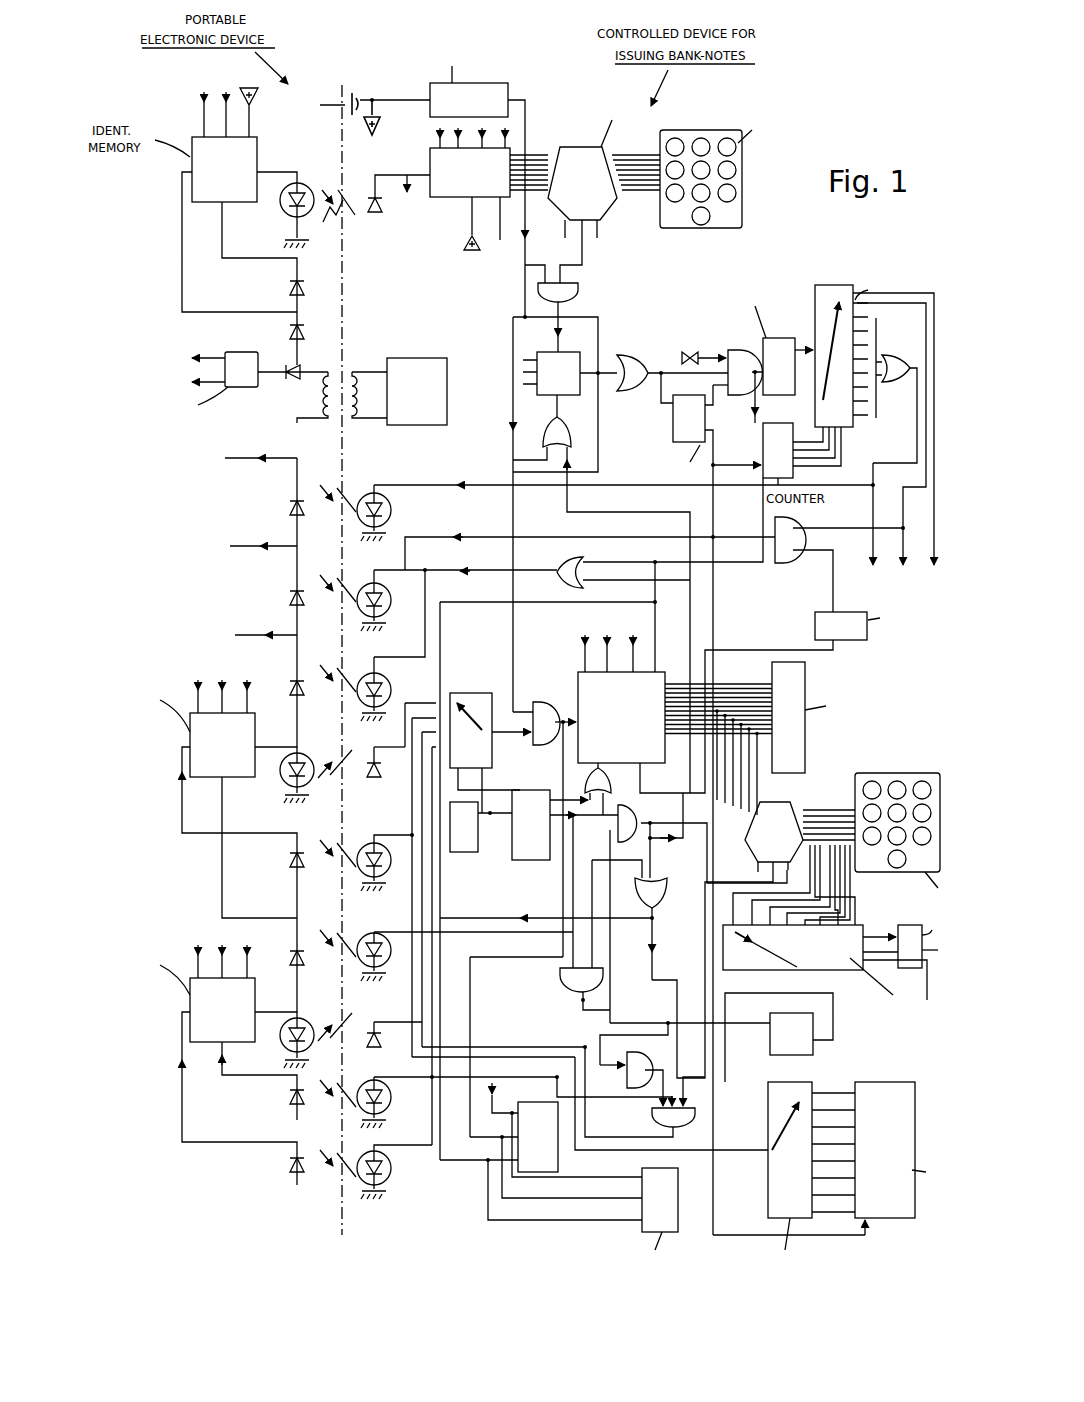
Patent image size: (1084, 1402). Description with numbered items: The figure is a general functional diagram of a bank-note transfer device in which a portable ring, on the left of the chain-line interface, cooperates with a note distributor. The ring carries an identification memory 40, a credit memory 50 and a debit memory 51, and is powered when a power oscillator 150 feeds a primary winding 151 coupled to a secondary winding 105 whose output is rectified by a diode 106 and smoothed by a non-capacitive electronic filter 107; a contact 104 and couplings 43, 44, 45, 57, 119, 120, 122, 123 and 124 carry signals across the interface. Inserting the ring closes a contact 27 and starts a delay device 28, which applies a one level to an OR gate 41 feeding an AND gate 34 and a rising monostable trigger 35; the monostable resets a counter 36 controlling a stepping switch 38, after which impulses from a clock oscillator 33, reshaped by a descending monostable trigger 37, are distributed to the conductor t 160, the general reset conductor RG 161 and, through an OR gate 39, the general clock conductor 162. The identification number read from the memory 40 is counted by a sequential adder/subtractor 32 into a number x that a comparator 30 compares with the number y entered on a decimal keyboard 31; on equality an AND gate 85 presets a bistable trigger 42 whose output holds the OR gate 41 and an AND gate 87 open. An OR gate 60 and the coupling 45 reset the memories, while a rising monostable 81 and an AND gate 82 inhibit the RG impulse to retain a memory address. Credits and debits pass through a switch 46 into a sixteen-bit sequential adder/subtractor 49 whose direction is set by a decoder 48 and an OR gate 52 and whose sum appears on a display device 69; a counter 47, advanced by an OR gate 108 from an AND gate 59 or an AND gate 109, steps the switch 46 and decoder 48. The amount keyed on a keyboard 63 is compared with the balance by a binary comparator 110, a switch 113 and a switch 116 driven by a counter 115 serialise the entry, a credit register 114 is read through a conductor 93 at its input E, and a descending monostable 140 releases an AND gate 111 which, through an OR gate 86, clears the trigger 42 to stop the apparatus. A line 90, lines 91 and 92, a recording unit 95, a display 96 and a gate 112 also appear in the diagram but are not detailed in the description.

The contact 27 is at (375, 104).
The delay device 28 is at (478, 185).
The comparator 30 is at (569, 148).
The decimal keyboard 31 is at (693, 131).
The sequential adder/subtractor 32 is at (475, 183).
The clock oscillator 33 is at (672, 325).
The AND gate 34 is at (738, 373).
The rising monostable trigger 35 is at (701, 428).
The counter 36 is at (779, 425).
The descending monostable trigger 37 is at (770, 343).
The stepping switch 38 is at (830, 286).
The OR gate 39 is at (895, 396).
The identification memory 40 is at (257, 152).
The OR gate 41 is at (672, 366).
The bistable trigger 42 is at (537, 396).
The relay contact 43 is at (330, 486).
The coupling 44 is at (330, 576).
The optical coupling 45 is at (330, 666).
The switch 46 is at (492, 693).
The counter 47 is at (460, 854).
The decoder 48 is at (530, 857).
The sequential adder/subtractor 49 is at (578, 687).
The credit memory 50 is at (255, 734).
The debit memory 51 is at (255, 997).
The OR gate 52 is at (605, 780).
The coupling 57 is at (351, 957).
The AND gate 59 is at (638, 815).
The OR gate 60 is at (558, 570).
The keyboard 63 is at (896, 774).
The display device 69 is at (805, 692).
The rising monostable 81 is at (868, 636).
The AND gate 82 is at (776, 530).
The AND gate 85 is at (578, 284).
The OR gate 86 is at (545, 436).
The AND gate 87 is at (538, 752).
The control line 90 is at (400, 193).
The line 91 is at (466, 1110).
The line 92 is at (464, 1162).
The conductor 93 is at (714, 1176).
The recording unit 95 is at (550, 1105).
The display 96 is at (675, 1183).
The relay contact 104 is at (348, 215).
The secondary winding 105 is at (316, 382).
The diode 106 is at (294, 377).
The non-capacitive electronic filter 107 is at (250, 352).
The OR gate 108 is at (636, 892).
The AND gate 109 is at (560, 992).
The binary comparator 110 is at (773, 806).
The AND gate 111 is at (627, 1084).
The AND gate 112 is at (653, 1116).
The switch 113 is at (768, 1116).
The credit register 114 is at (897, 1082).
The counter 115 is at (898, 925).
The switch 116 is at (866, 925).
The coupling 119 is at (324, 768).
The coupling 120 is at (356, 863).
The coupling 122 is at (367, 1035).
The coupling 123 is at (351, 1102).
The coupling 124 is at (366, 1172).
The descending monostable 140 is at (770, 1030).
The power oscillator 150 is at (409, 358).
The primary winding 151 is at (369, 381).
The conductor t 160 is at (894, 440).
The general reset conductor RG 161 is at (891, 445).
The general clock conductor 162 is at (868, 552).